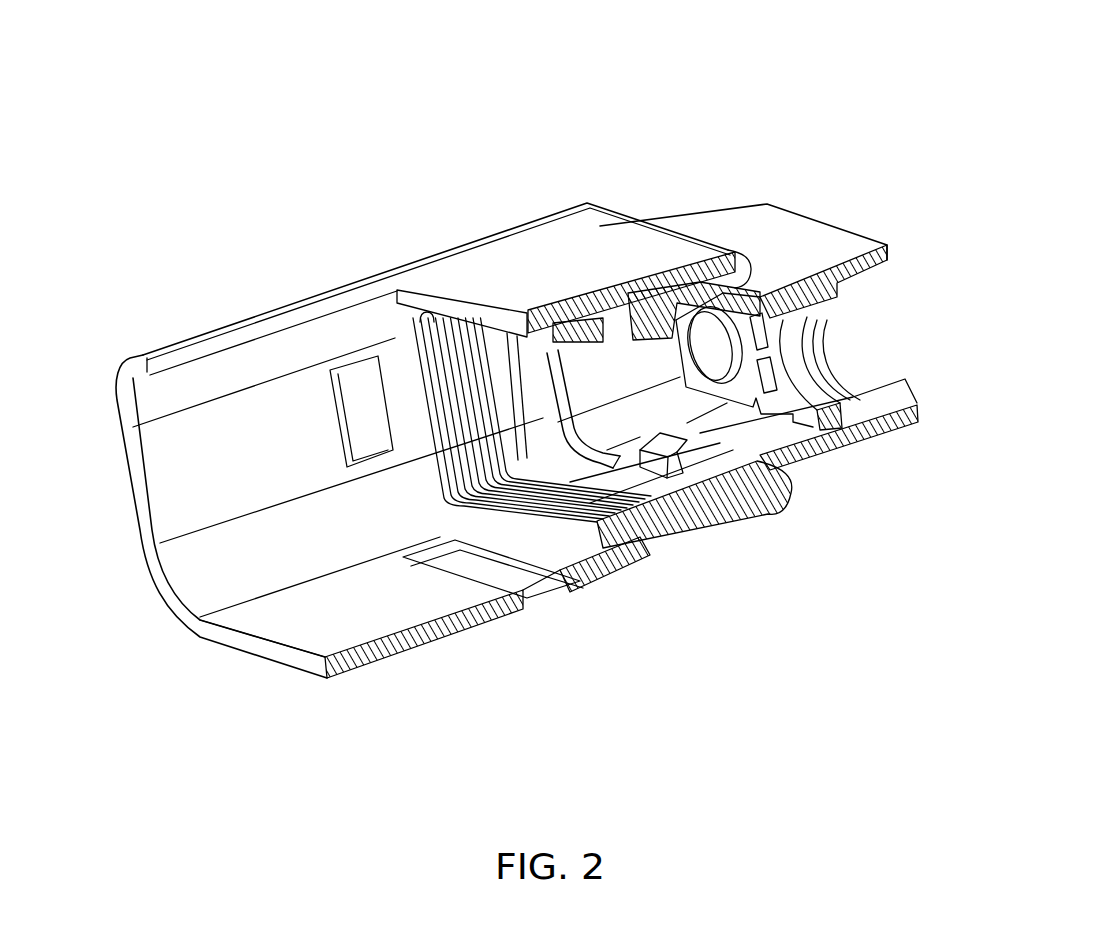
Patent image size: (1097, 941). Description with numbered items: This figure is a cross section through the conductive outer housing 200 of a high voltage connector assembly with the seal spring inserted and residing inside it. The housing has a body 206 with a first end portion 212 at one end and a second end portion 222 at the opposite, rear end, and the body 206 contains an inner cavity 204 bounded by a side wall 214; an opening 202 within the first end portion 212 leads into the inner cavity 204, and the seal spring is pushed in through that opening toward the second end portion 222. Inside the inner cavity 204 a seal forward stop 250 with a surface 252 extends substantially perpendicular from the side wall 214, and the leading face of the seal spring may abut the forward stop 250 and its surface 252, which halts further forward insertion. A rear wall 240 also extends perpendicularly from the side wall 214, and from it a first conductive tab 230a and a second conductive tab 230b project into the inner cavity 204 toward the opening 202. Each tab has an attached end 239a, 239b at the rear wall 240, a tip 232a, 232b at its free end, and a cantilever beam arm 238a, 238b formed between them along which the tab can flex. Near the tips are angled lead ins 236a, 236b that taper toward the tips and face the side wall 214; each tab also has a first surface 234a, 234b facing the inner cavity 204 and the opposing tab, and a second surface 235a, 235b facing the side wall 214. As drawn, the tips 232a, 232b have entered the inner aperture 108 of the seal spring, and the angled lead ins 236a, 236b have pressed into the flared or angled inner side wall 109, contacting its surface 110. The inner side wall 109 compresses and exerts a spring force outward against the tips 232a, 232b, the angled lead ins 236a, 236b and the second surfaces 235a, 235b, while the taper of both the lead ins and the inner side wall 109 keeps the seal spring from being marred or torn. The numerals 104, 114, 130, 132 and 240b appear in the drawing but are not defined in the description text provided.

The opening 104 is at (488, 520).
The inner aperture 108 is at (373, 356).
The inner side wall 109 is at (497, 452).
The surface 110 is at (603, 510).
The cable end 114 is at (575, 545).
The conductor 130 is at (487, 388).
The insulation layer 132 is at (490, 430).
The conductive outer housing 200 is at (637, 255).
The opening 202 is at (180, 457).
The inner cavity 204 is at (383, 613).
The body 206 is at (263, 313).
The first end portion 212 is at (277, 658).
The side wall 214 is at (233, 413).
The second end portion 222 is at (855, 237).
The first conductive tab 230a is at (667, 305).
The second conductive tab 230b is at (727, 507).
The tip 232a is at (567, 290).
The tip 232b is at (708, 530).
The first surface 234a is at (707, 292).
The first surface 234b is at (733, 503).
The second surface 235a is at (653, 295).
The second surface 235b is at (717, 487).
The angled lead in 236a is at (600, 305).
The angled lead in 236b is at (682, 500).
The cantilever beam arm 238a is at (687, 302).
The cantilever beam arm 238b is at (745, 500).
The attached end 239a is at (780, 290).
The attached end 239b is at (790, 487).
The rear wall 240 is at (745, 280).
The bottom plate 240b is at (757, 480).
The seal forward stop 250 is at (470, 382).
The surface 252 is at (478, 355).